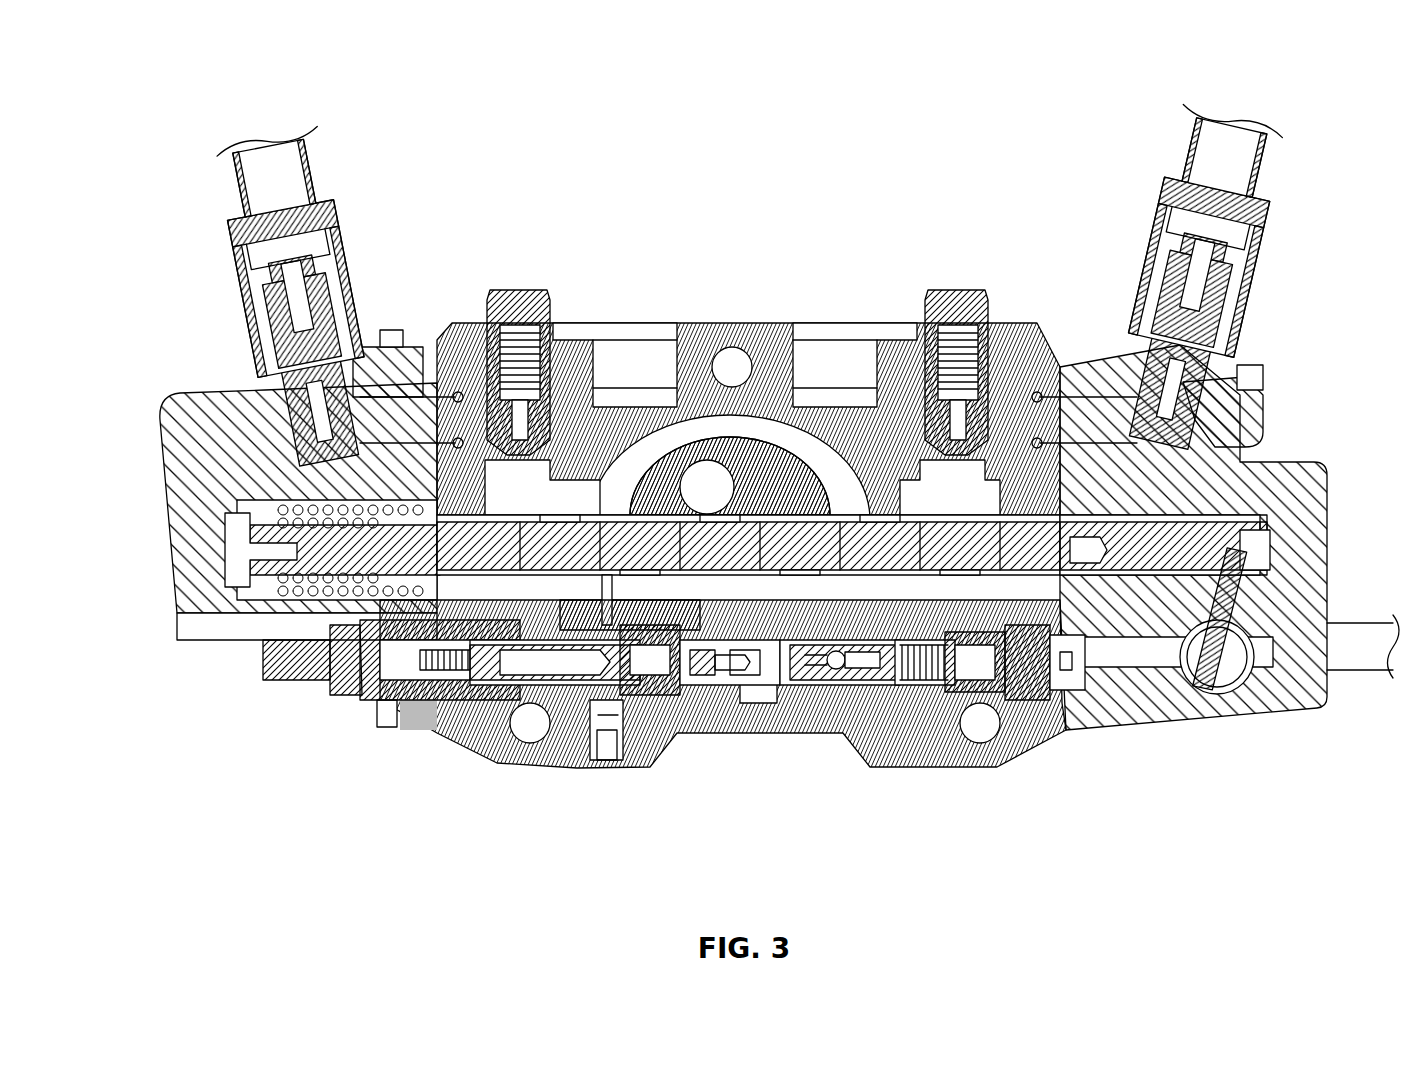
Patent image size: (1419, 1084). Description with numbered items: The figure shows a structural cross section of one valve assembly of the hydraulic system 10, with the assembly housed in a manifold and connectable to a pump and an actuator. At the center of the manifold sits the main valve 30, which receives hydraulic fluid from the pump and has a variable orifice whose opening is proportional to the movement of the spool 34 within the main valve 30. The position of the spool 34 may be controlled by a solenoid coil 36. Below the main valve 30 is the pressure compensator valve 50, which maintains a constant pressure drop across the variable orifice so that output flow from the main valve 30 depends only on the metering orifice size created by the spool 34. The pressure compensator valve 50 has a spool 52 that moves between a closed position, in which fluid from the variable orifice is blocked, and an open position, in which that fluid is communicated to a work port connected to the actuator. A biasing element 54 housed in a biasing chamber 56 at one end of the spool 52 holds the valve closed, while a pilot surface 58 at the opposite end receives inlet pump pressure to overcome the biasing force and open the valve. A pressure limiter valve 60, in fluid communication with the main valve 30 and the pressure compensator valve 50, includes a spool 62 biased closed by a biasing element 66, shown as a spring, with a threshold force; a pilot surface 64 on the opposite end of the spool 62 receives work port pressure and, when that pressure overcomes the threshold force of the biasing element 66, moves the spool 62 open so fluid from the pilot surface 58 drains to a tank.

The hydraulic system 10 is at (1190, 80).
The main valve 30 is at (735, 510).
The spool 34 is at (663, 520).
The solenoid coil 36 is at (243, 513).
The pressure compensator valve 50 is at (752, 705).
The spool 52 is at (800, 668).
The biasing element 54 is at (947, 660).
The biasing chamber 56 is at (910, 690).
The pilot surface 58 is at (648, 700).
The pressure limiter valve 60 is at (413, 647).
The spool 62 is at (545, 680).
The pilot surface 64 is at (562, 705).
The biasing element 66 is at (470, 672).